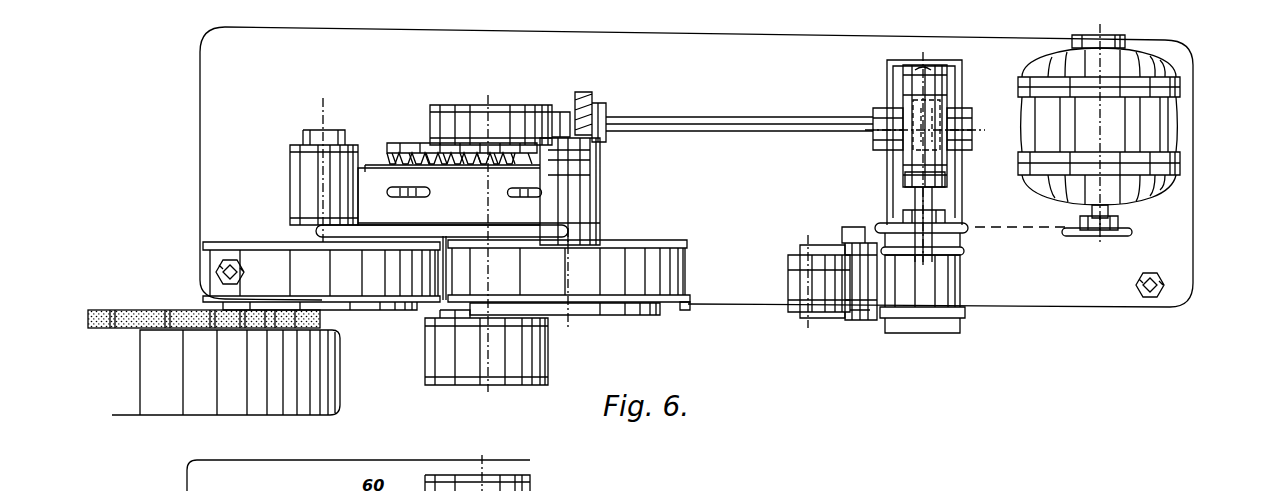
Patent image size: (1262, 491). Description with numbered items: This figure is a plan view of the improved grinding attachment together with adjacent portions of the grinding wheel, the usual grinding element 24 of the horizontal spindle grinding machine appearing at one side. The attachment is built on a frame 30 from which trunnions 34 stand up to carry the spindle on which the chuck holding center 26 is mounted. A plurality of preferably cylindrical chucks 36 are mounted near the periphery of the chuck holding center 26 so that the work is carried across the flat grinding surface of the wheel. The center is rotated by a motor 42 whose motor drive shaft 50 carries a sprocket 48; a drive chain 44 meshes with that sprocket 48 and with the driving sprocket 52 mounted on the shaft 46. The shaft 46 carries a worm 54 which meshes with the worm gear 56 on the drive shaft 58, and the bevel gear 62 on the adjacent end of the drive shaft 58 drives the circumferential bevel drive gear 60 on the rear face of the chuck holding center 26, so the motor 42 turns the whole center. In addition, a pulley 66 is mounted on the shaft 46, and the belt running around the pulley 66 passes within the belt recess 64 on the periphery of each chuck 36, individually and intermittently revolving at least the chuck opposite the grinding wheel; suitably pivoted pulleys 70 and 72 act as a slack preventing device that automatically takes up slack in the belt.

The grinding element 24 is at (114, 310).
The chuck holding center 26 is at (524, 212).
The frame 30 is at (1195, 203).
The trunnions 34 is at (490, 105).
The chucks 36 is at (330, 135).
The motor 42 is at (1178, 102).
The drive chain 44 is at (1025, 232).
The shaft 46 is at (932, 207).
The sprocket 48 is at (1120, 237).
The motor drive shaft 50 is at (1105, 212).
The driving sprocket 52 is at (967, 233).
The worm 54 is at (940, 108).
The worm gear 56 is at (945, 172).
The drive shaft 58 is at (766, 117).
The circumferential bevel drive gear 60 is at (390, 156).
The bevel gear 62 is at (577, 96).
The belt recess 64 is at (685, 310).
The pulley 66 is at (940, 320).
The pulley 70 is at (850, 300).
The pulley 72 is at (795, 312).